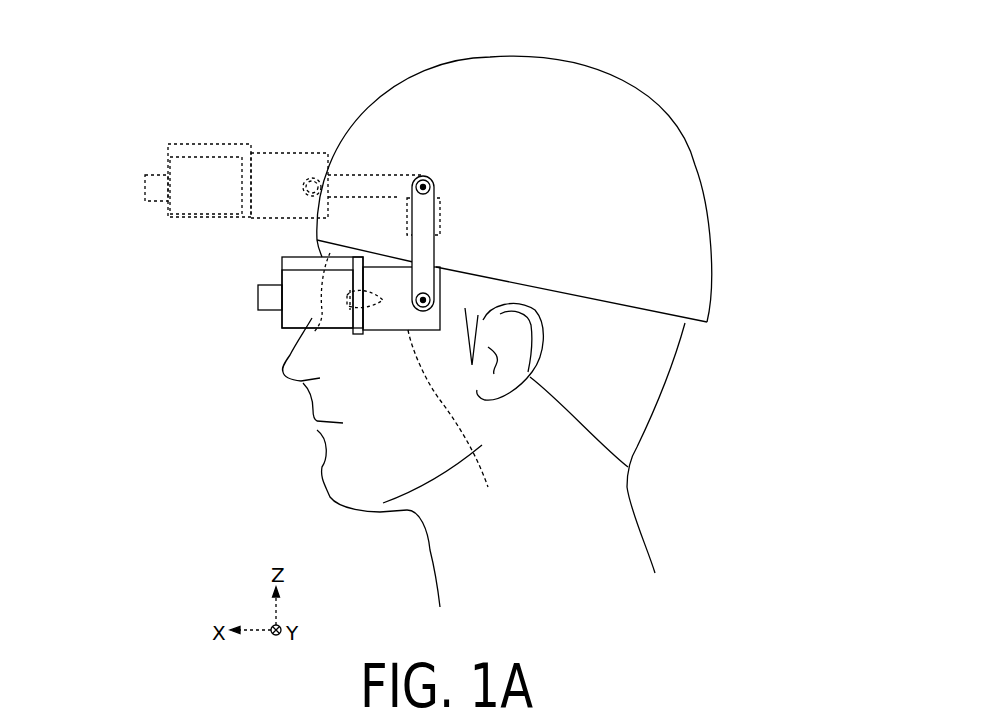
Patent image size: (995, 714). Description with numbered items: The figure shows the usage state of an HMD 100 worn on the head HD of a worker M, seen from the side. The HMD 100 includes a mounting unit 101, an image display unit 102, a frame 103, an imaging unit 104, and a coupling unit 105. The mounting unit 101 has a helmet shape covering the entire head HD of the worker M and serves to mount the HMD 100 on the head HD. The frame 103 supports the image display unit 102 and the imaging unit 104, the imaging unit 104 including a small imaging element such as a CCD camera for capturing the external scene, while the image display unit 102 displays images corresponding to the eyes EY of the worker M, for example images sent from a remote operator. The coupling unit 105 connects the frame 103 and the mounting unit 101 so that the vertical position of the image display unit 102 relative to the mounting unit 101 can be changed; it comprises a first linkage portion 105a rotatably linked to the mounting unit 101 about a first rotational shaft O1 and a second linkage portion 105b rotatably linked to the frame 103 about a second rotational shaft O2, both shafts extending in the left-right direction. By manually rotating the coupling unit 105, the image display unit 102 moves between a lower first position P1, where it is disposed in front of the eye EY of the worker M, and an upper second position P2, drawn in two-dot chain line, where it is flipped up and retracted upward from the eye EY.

The HMD 100 is at (447, 261).
The mounting unit 101 is at (667, 157).
The image display unit 102 is at (300, 323).
The frame 103 is at (459, 426).
The imaging unit 104 is at (260, 298).
The coupling unit 105 is at (517, 155).
The first linkage portion 105a is at (441, 97).
The second linkage portion 105b is at (513, 267).
The first rotational shaft O1 is at (423, 180).
The second rotational shaft O2 is at (430, 297).
The first position P1 is at (287, 322).
The second position P2 is at (193, 132).
The eye EY is at (345, 295).
The head HD is at (496, 370).
The worker M is at (647, 502).